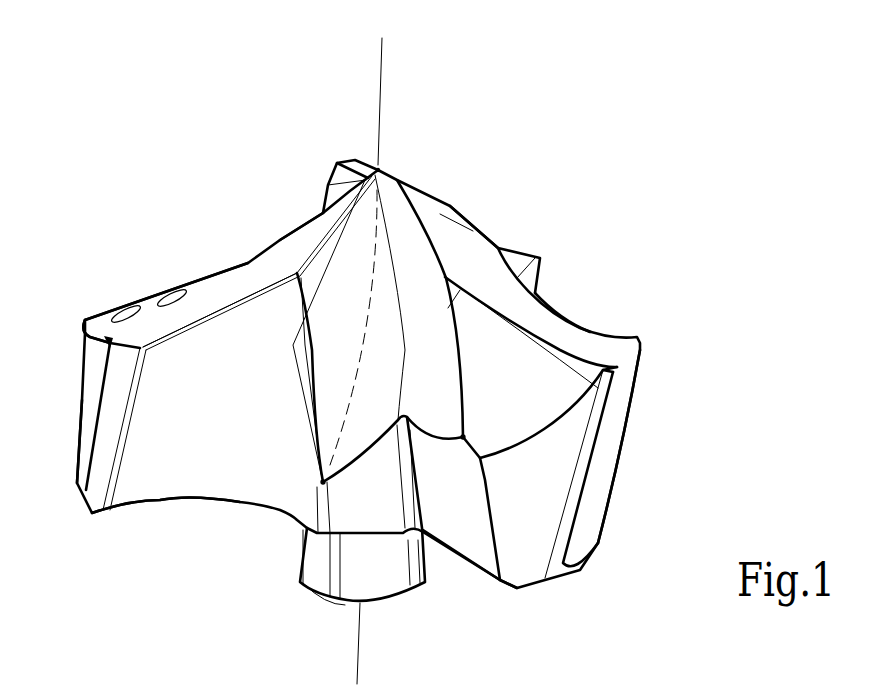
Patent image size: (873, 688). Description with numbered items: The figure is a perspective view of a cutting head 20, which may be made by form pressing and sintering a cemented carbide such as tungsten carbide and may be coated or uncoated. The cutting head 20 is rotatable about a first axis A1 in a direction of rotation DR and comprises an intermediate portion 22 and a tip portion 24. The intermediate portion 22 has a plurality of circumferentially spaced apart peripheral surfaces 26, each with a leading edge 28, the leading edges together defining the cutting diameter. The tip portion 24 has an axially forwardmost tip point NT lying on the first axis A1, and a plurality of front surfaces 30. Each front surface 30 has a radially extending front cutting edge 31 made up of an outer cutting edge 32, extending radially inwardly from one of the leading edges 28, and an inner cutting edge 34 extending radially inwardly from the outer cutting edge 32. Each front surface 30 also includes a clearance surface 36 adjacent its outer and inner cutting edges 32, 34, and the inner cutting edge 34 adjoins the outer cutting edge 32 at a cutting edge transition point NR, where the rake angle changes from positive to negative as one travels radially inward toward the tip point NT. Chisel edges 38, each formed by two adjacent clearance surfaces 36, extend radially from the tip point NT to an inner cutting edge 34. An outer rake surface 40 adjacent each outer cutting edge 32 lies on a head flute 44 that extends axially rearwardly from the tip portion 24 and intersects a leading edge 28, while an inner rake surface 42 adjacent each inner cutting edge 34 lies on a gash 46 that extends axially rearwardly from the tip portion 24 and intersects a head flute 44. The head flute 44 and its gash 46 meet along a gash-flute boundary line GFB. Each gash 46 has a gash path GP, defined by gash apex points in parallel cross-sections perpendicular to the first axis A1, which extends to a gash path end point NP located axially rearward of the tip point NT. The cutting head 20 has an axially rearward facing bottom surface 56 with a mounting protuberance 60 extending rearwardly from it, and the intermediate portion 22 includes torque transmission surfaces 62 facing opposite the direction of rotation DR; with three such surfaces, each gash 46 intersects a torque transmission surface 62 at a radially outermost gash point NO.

The cutting head 20 is at (642, 165).
The intermediate portion 22 is at (187, 375).
The tip portion 24 is at (280, 250).
The peripheral surface 26 is at (527, 515).
The leading edge 28 is at (100, 445).
The front surface 30 is at (563, 400).
The front cutting edge 31 is at (590, 152).
The outer cutting edge 32 is at (545, 297).
The inner cutting edge 34 is at (323, 210).
The clearance surface 36 is at (545, 325).
The chisel edge 38 is at (362, 166).
The outer rake surface 40 is at (110, 340).
The inner rake surface 42 is at (296, 272).
The head flute 44 is at (216, 389).
The gash 46 is at (335, 329).
The bottom surface 56 is at (177, 503).
The mounting protuberance 60 is at (387, 570).
The torque transmission surface 62 is at (467, 500).
The direction of rotation DR is at (333, 53).
The first axis A1 is at (370, 361).
The tip point NT is at (379, 170).
The gash path GP is at (380, 238).
The cutting edge transition point NR is at (293, 273).
The radially outermost gash point NO is at (463, 437).
The gash path end point NP is at (323, 482).
The gash-flute boundary line GFB is at (313, 402).